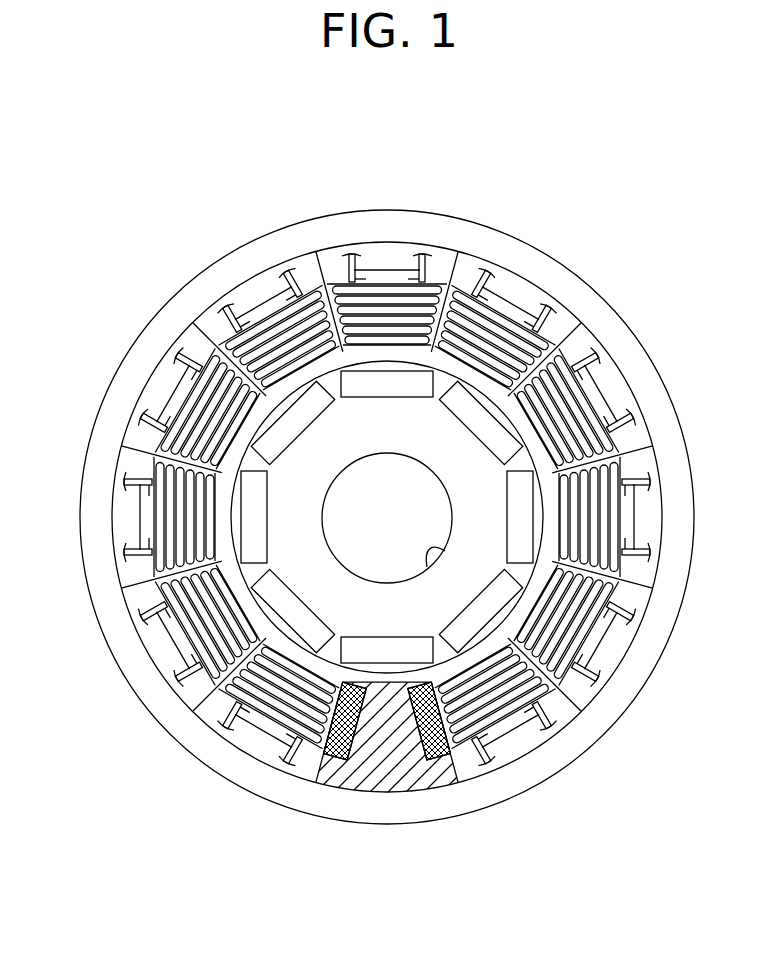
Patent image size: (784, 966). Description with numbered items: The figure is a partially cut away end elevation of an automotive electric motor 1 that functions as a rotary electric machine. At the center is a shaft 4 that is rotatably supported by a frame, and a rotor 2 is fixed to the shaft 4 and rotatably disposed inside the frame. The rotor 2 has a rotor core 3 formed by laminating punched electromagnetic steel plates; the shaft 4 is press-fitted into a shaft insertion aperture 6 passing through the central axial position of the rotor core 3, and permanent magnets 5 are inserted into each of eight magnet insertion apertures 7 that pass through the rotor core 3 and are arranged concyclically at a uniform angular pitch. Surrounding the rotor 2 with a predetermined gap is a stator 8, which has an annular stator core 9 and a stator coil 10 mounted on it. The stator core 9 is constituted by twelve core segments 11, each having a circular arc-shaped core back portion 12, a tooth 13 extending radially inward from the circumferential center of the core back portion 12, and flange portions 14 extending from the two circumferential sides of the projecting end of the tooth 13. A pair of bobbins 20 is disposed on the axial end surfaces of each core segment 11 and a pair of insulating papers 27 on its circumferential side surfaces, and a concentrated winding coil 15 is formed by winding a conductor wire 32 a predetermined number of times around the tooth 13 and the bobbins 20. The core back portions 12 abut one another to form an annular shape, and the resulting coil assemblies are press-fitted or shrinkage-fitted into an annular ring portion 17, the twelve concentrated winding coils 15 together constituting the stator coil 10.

The automotive electric motor 1 is at (108, 115).
The rotor 2 is at (443, 400).
The rotor core 3 is at (528, 460).
The shaft 4 is at (437, 527).
The permanent magnets 5 is at (563, 494).
The shaft insertion aperture 6 is at (445, 551).
The magnet insertion apertures 7 is at (490, 418).
The stator 8 is at (143, 656).
The stator core 9 is at (148, 645).
The stator coil 10 is at (187, 643).
The core segments 11 is at (396, 802).
The core back portion 12 is at (352, 770).
The tooth 13 is at (386, 735).
The flange portions 14 is at (423, 725).
The concentrated winding coil 15 is at (172, 515).
The ring portion 17 is at (133, 355).
The bobbins 20 is at (260, 732).
The insulating papers 27 is at (232, 678).
The conductor wire 32 is at (125, 556).